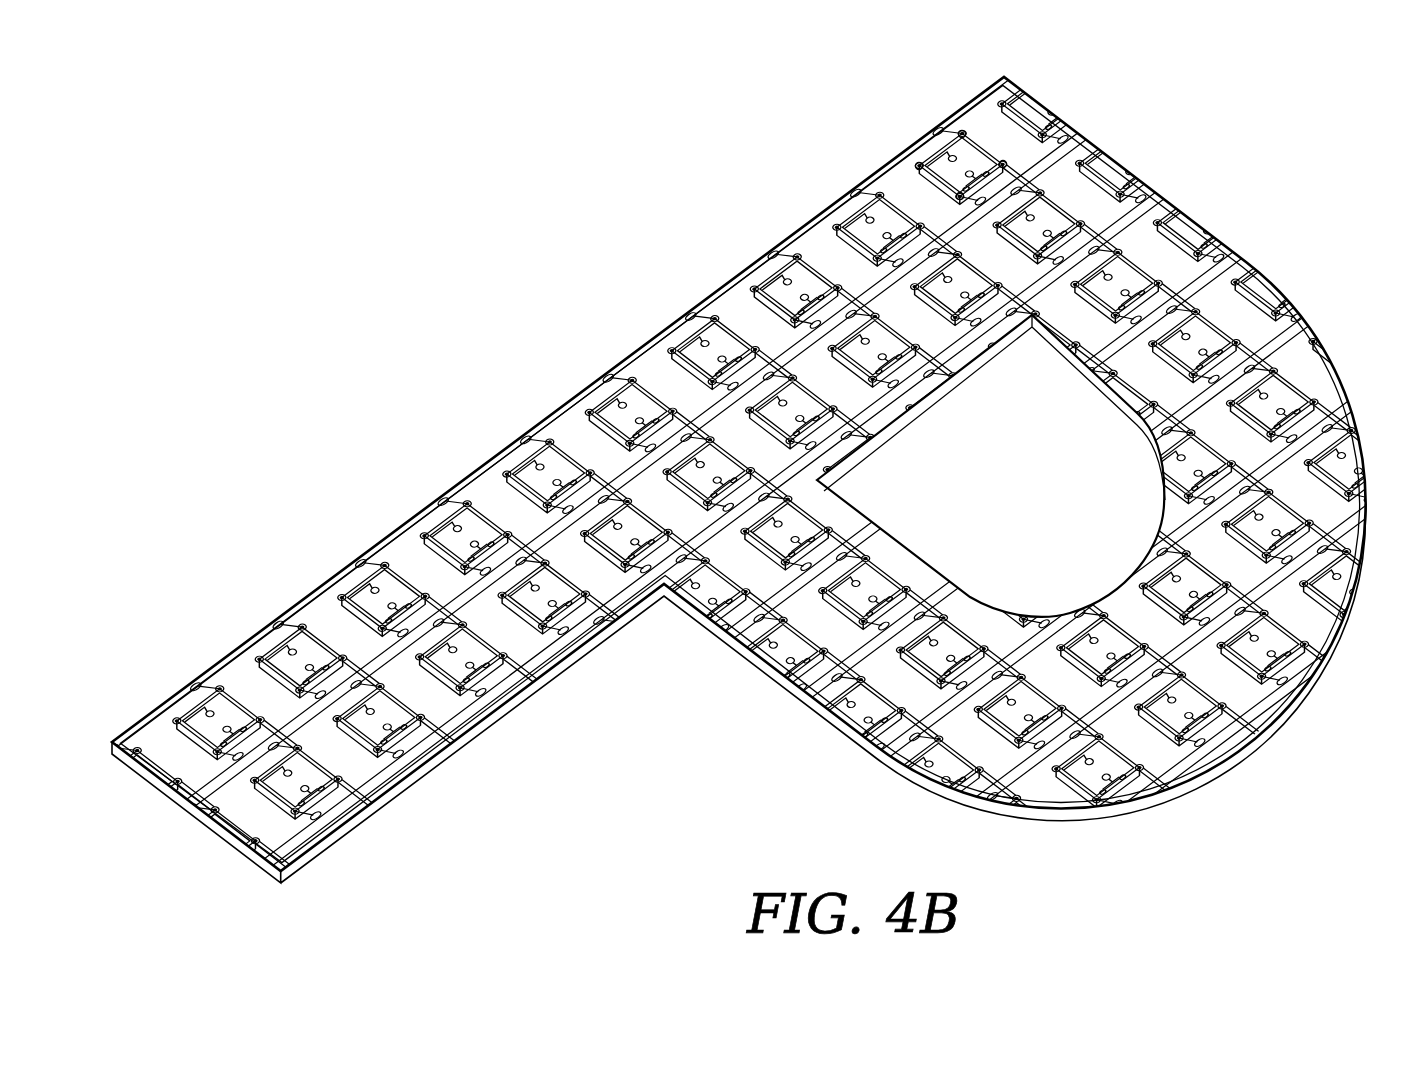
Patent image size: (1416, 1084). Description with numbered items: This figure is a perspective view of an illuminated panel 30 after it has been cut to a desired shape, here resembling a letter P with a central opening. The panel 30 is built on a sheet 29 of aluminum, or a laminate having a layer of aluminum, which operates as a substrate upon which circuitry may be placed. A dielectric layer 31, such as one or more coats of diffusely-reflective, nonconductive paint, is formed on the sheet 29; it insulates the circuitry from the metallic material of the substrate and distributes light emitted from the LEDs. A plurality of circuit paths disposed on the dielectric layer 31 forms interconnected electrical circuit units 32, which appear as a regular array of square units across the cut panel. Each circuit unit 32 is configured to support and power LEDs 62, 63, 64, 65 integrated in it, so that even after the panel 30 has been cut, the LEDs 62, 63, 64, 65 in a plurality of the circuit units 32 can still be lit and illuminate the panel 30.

The sheet 29 is at (168, 787).
The illuminated panel 30 is at (1208, 145).
The dielectric layer 31 is at (265, 825).
The circuit unit 32 is at (1275, 405).
The LED 62 is at (962, 128).
The LED 63 is at (1003, 160).
The LED 64 is at (920, 164).
The LED 65 is at (958, 196).